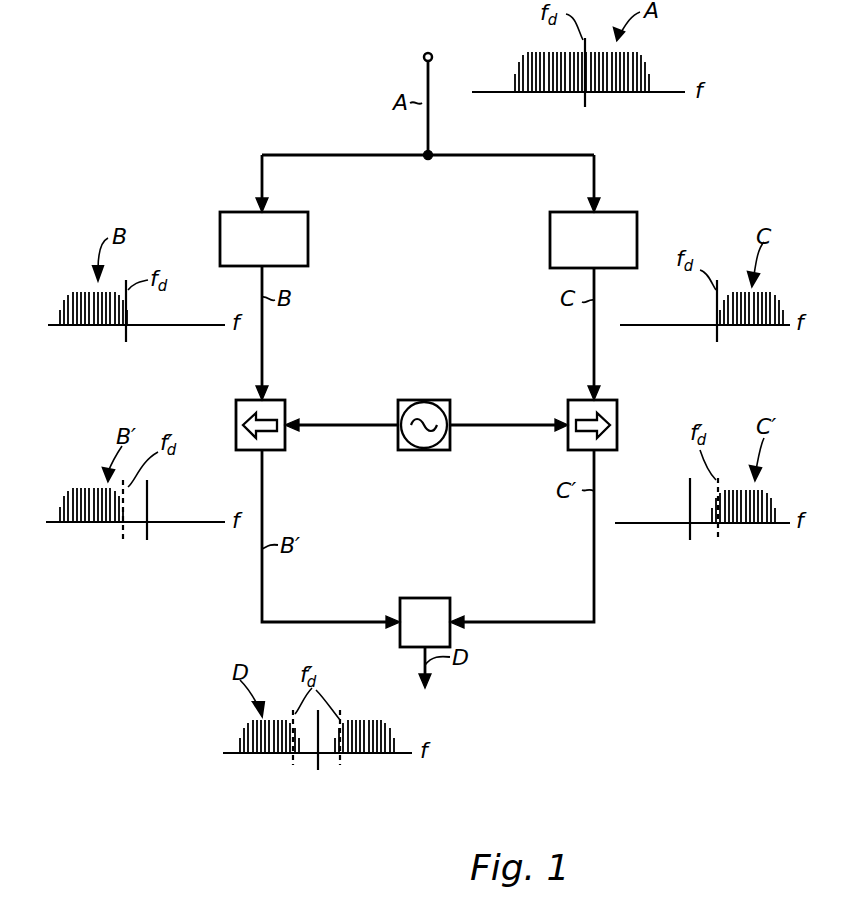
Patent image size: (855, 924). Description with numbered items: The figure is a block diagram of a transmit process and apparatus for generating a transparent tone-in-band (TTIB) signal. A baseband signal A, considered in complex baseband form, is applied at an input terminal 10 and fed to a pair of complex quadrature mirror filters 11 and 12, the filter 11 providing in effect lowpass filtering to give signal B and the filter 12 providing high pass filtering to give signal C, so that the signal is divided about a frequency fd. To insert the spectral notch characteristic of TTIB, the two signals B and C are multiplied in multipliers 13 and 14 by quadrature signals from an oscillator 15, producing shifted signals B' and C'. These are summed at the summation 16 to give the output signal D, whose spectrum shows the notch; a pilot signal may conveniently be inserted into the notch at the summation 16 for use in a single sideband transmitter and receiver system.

The input terminal 10 is at (430, 52).
The complex quadrature mirror filter 11 is at (308, 237).
The complex quadrature mirror filter 12 is at (550, 237).
The multiplier 13 is at (285, 406).
The multiplier 14 is at (572, 402).
The oscillator 15 is at (422, 402).
The summation 16 is at (425, 598).